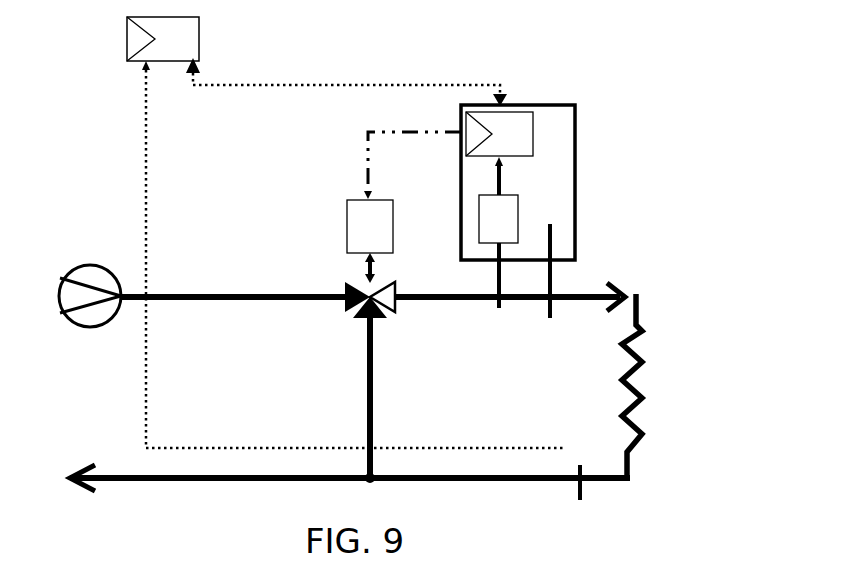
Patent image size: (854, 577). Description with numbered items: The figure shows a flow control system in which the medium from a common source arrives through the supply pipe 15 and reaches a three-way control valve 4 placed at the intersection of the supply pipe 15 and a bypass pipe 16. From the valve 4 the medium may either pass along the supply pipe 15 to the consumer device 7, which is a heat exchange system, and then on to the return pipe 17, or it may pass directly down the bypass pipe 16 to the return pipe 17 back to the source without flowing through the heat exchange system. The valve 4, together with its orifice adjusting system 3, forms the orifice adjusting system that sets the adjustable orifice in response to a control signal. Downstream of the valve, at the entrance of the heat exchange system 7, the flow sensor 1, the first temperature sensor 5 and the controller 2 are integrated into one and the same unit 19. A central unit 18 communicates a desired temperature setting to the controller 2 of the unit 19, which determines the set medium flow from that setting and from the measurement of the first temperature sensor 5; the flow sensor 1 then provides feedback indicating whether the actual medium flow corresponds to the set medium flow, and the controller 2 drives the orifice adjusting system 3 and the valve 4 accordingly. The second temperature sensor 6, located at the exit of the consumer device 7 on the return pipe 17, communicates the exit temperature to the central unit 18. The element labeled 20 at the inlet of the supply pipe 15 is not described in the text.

The flow sensor 1 is at (498, 232).
The controller 2 is at (499, 134).
The orifice adjusting system 3 is at (370, 241).
The three-way control valve 4 is at (385, 309).
The first temperature sensor 5 is at (550, 254).
The second temperature sensor 6 is at (580, 465).
The consumer device 7 is at (635, 373).
The supply pipe 15 is at (233, 293).
The bypass pipe 16 is at (367, 383).
The return pipe 17 is at (225, 480).
The central unit 18 is at (137, 42).
The unit 19 is at (555, 122).
The pump 20 is at (90, 296).